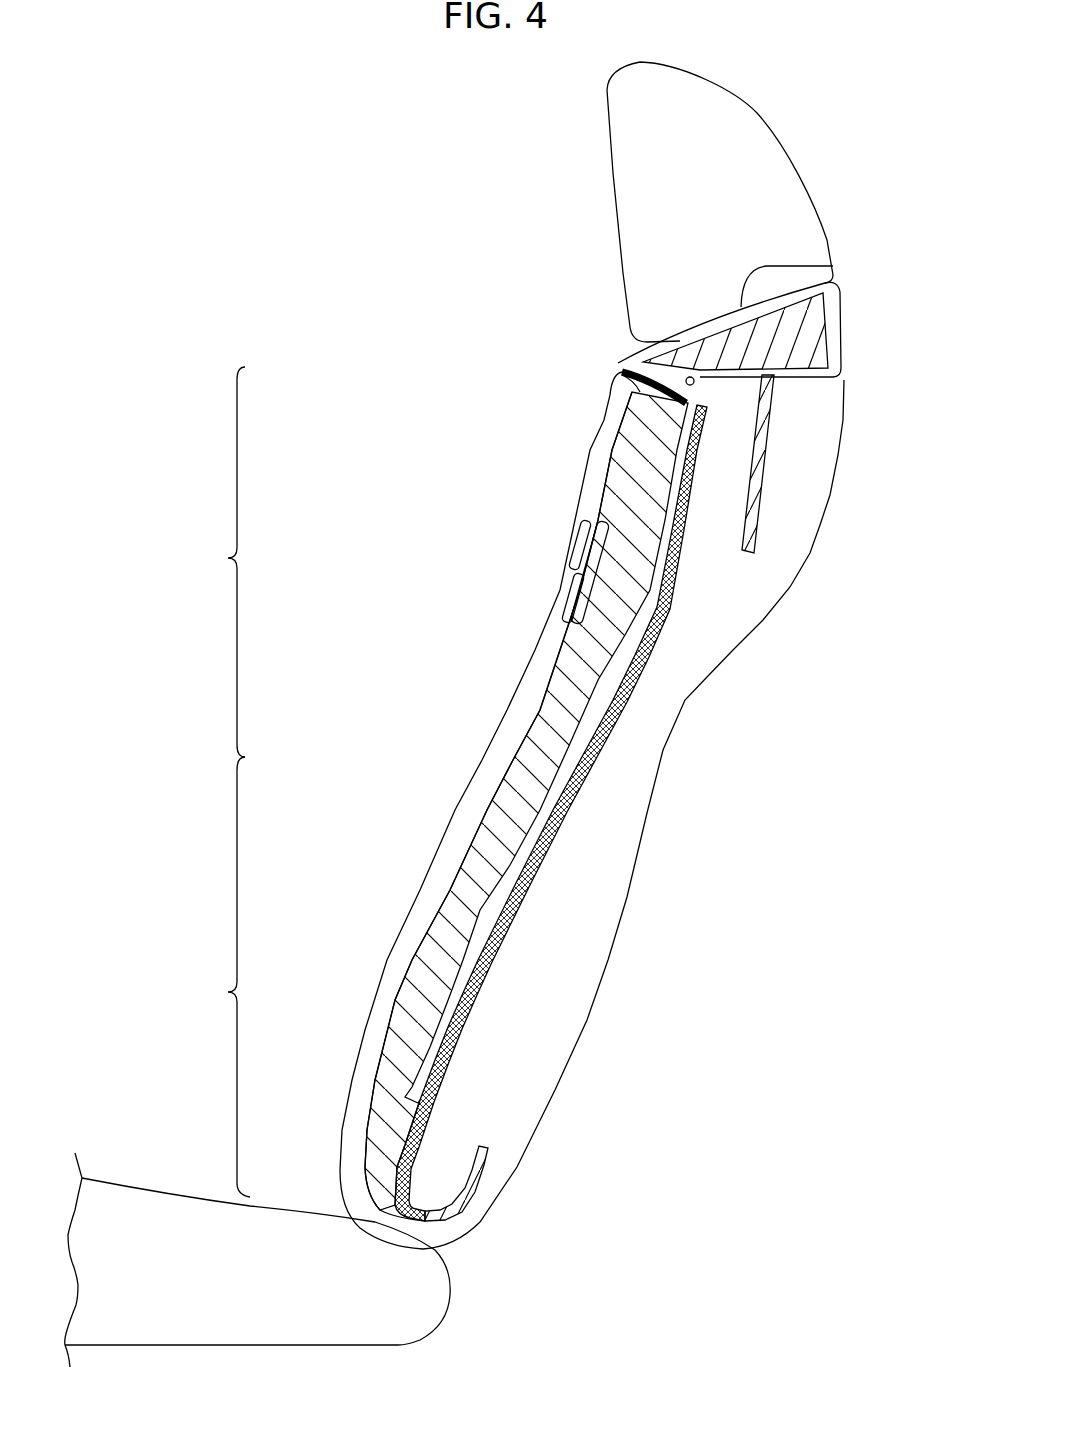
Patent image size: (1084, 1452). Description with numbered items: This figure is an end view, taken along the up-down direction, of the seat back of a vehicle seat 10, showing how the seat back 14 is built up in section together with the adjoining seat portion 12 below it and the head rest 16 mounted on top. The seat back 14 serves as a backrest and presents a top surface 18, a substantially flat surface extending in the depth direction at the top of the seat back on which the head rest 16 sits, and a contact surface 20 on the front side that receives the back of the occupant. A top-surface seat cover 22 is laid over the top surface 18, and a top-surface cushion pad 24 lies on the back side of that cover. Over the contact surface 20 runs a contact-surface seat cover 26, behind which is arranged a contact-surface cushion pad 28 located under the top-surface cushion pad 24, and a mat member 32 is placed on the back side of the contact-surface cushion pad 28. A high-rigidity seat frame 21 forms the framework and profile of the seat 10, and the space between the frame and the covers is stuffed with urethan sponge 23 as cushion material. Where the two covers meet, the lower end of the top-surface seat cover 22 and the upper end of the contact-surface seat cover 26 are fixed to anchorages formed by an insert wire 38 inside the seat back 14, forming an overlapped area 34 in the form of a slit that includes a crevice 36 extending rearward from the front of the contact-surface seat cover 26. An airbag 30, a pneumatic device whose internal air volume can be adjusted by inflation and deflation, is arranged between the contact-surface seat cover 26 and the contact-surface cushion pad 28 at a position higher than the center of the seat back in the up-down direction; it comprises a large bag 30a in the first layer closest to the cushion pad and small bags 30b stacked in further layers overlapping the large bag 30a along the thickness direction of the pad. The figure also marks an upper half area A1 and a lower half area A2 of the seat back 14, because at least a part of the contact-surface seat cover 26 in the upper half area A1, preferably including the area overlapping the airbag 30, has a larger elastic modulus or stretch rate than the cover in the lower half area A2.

The seat 10 is at (448, 195).
The seat portion 12 is at (170, 1168).
The seat back 14 is at (700, 724).
The head rest 16 is at (818, 182).
The top surface 18 is at (835, 270).
The contact surface 20 is at (468, 773).
The seat frame 21 is at (765, 483).
The top-surface seat cover 22 is at (618, 362).
The urethan sponge 23 is at (540, 943).
The top-surface cushion pad 24 is at (810, 330).
The contact-surface seat cover 26 is at (587, 470).
The contact-surface cushion pad 28 is at (573, 663).
The airbag 30 is at (547, 567).
The large bag 30a is at (573, 627).
The small bag 30b is at (567, 558).
The mat member 32 is at (590, 757).
The overlapped area 34 is at (632, 393).
The crevice 36 is at (620, 369).
The insert wire 38 is at (720, 378).
The upper half area A1 is at (217, 562).
The lower half area A2 is at (220, 977).